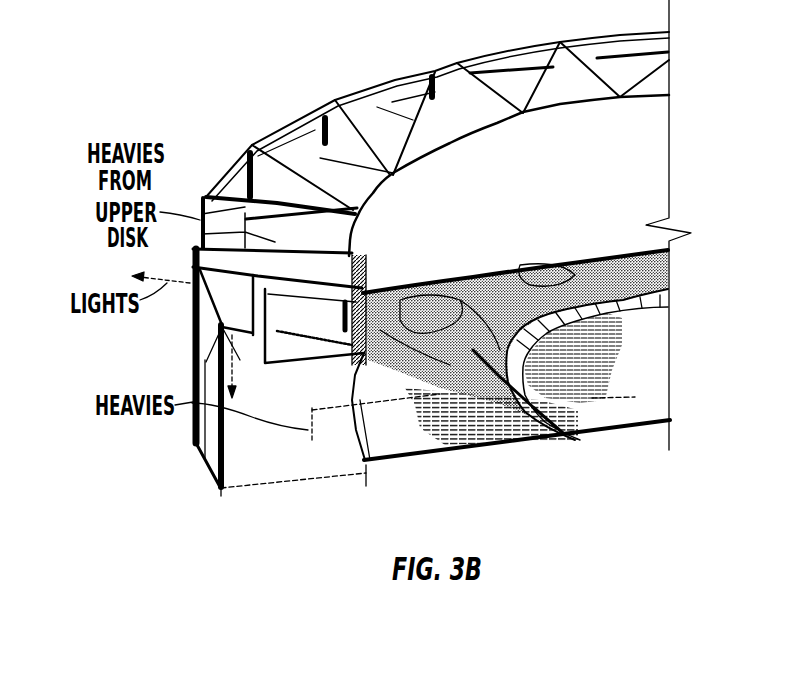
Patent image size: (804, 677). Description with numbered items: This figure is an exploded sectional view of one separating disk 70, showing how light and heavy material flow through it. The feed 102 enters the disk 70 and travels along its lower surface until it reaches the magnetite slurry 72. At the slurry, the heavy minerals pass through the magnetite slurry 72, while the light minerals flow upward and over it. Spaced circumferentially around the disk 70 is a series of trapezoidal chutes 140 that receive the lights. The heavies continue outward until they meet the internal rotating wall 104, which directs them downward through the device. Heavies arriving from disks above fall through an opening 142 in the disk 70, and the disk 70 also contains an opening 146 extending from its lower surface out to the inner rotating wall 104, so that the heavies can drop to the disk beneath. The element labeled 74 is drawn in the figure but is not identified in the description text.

The separating disk 70 is at (188, 72).
The opening 142 is at (213, 180).
The trapezoidal chute 140 is at (357, 232).
The magnetite slurry 72 is at (358, 377).
The trough 74 is at (430, 414).
The feed 102 is at (620, 397).
The internal rotating wall 104 is at (225, 444).
The opening 146 is at (290, 483).